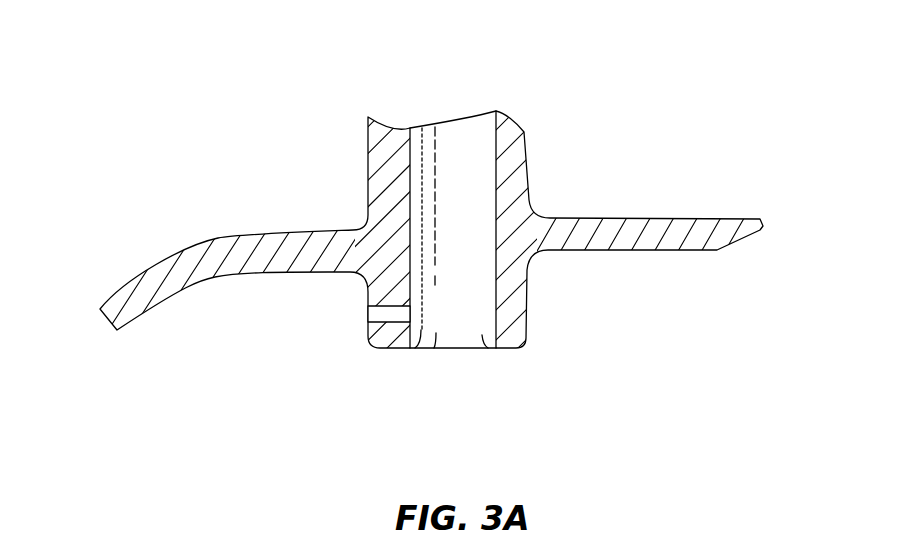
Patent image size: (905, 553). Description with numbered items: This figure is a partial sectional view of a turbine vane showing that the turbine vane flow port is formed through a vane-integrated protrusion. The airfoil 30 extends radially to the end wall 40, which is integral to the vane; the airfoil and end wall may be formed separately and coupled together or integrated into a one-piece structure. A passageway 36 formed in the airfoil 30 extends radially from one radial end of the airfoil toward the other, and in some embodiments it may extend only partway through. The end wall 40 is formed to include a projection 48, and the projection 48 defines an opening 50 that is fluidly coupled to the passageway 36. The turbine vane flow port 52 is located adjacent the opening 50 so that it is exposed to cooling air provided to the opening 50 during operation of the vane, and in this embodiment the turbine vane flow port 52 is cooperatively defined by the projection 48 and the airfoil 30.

The airfoil 30 is at (452, 256).
The passageway 36 is at (470, 125).
The end wall 40 is at (212, 222).
The projection 48 is at (548, 313).
The opening 50 is at (459, 362).
The turbine vane flow port 52 is at (352, 324).